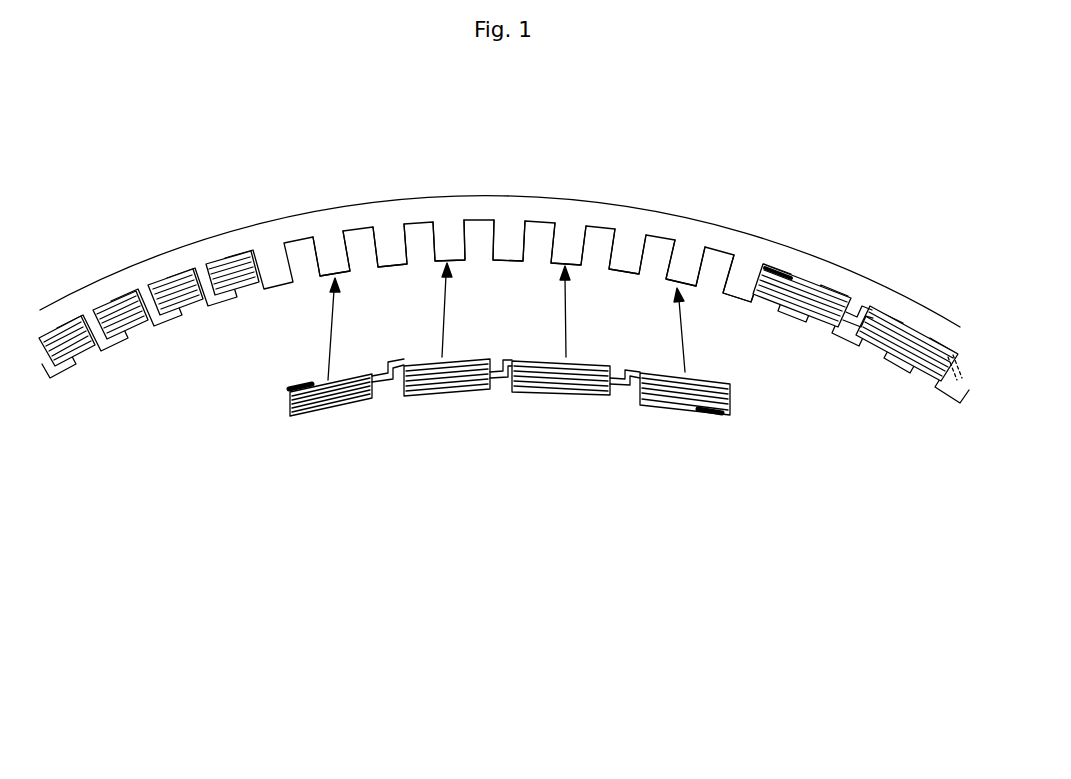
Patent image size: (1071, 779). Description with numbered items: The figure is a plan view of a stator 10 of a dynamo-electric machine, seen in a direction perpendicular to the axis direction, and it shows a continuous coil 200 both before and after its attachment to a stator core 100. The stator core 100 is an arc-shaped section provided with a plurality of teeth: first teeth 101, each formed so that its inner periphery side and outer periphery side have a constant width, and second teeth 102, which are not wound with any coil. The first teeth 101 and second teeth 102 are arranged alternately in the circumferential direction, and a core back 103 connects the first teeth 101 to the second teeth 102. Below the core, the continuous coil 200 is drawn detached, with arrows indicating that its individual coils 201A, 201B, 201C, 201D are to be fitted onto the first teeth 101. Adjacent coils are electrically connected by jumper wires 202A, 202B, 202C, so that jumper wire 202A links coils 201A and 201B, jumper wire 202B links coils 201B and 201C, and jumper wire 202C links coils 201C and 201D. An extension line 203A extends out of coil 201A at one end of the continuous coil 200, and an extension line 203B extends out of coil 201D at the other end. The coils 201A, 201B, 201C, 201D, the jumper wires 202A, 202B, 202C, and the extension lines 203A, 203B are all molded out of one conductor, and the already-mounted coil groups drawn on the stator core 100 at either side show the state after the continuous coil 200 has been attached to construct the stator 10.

The stator 10 is at (183, 152).
The stator core 100 is at (878, 268).
The first teeth 101 is at (330, 243).
The second teeth 102 is at (388, 242).
The core back 103 is at (232, 243).
The continuous coil 200 is at (537, 392).
The coil 201A is at (340, 413).
The coil 201B is at (450, 400).
The coil 201C is at (567, 400).
The coil 201D is at (683, 410).
The jumper wire 202A is at (390, 400).
The jumper wire 202B is at (503, 400).
The jumper wire 202C is at (622, 400).
The extension line 203A is at (297, 398).
The extension line 203B is at (707, 417).